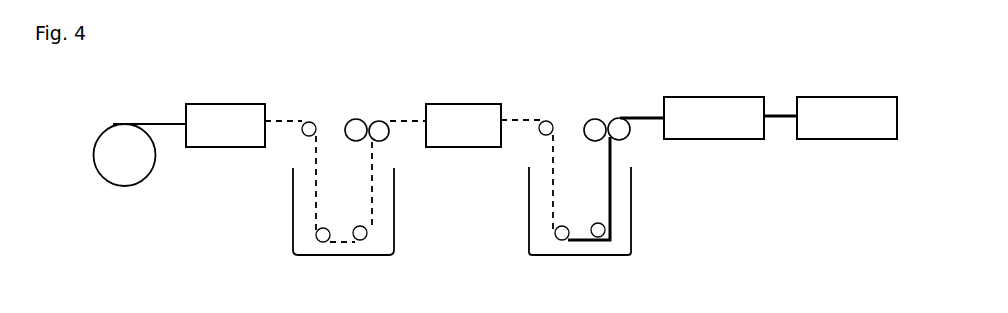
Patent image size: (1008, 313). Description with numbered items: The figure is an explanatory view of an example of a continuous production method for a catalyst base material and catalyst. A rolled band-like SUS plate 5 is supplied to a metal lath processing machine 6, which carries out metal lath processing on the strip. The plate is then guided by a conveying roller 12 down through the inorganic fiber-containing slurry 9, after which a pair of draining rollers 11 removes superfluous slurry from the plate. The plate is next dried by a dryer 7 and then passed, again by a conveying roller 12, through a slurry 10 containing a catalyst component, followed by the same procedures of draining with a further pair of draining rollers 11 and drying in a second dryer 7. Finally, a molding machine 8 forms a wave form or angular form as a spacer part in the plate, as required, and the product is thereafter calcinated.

The band-like SUS plate 5 is at (120, 148).
The metal lath processing machine 6 is at (233, 116).
The dryer 7 is at (458, 112).
The molding machine 8 is at (843, 105).
The inorganic fiber-containing slurry 9 is at (308, 239).
The catalyst component slurry 10 is at (540, 212).
The draining roller 11 is at (388, 137).
The conveying roller 12 is at (309, 122).